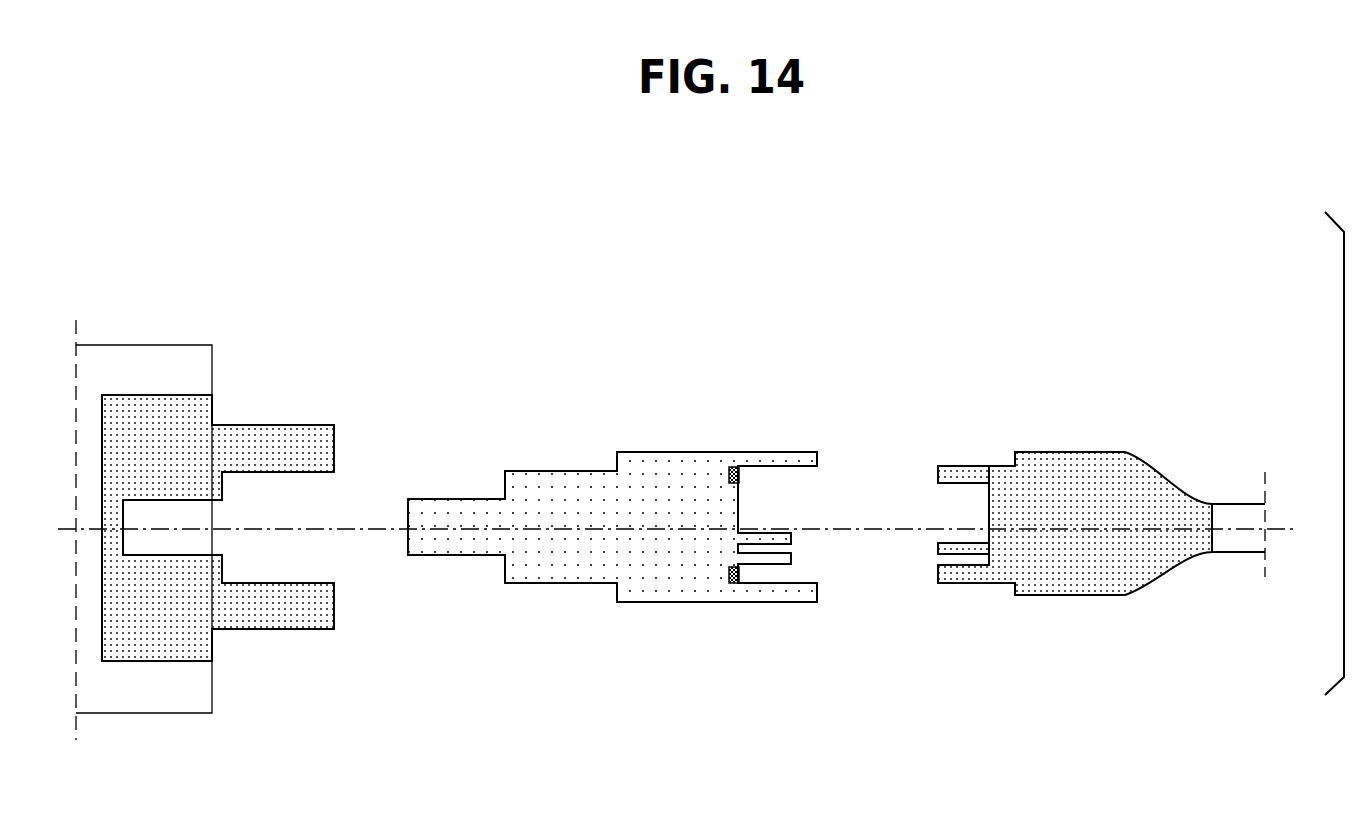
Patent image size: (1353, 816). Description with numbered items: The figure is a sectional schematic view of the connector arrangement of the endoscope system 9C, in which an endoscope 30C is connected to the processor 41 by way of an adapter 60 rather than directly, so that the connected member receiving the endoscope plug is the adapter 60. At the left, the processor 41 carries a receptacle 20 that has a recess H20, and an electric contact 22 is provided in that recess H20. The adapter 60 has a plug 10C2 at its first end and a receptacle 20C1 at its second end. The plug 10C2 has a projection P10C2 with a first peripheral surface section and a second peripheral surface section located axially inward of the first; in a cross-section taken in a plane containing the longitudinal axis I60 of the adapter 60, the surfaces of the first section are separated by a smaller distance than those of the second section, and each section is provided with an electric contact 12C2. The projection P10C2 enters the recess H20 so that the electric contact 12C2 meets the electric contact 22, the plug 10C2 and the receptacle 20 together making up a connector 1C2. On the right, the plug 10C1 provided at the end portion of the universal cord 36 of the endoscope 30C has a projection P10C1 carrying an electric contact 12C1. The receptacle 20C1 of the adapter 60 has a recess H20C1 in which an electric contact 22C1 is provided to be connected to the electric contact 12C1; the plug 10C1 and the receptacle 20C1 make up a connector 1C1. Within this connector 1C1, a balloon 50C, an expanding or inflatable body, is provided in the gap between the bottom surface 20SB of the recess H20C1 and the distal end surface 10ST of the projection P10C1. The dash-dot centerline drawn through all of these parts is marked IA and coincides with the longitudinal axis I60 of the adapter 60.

The processor 41 is at (151, 345).
The receptacle 20 is at (240, 425).
The electric contact 22 is at (270, 585).
The recess H20 is at (317, 490).
The adapter 60 is at (697, 360).
The electric contact 12C2 is at (458, 556).
The plug 10C2 is at (528, 471).
The projection P10C2 is at (502, 612).
The receptacle 20C1 is at (755, 452).
The recess H20C1 is at (802, 498).
The electric contact 22C1 is at (767, 556).
The balloon 50C is at (735, 586).
The bottom surface 20SB is at (742, 573).
The connector 1C2 is at (407, 328).
The connector 1C1 is at (861, 325).
The plug 10C1 is at (1093, 451).
The distal end surface 10ST is at (937, 474).
The electric contact 12C1 is at (963, 552).
The projection P10C1 is at (965, 610).
The universal cord 36 is at (1247, 553).
The endoscope 30C is at (1226, 588).
The endoscope system 9C is at (1243, 272).
The optical axis IA is at (697, 524).
The longitudinal axis I60 is at (1300, 524).